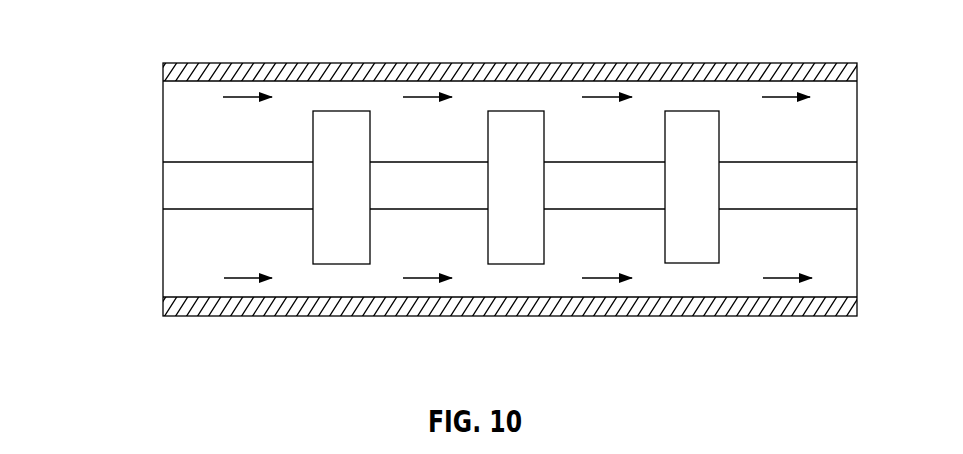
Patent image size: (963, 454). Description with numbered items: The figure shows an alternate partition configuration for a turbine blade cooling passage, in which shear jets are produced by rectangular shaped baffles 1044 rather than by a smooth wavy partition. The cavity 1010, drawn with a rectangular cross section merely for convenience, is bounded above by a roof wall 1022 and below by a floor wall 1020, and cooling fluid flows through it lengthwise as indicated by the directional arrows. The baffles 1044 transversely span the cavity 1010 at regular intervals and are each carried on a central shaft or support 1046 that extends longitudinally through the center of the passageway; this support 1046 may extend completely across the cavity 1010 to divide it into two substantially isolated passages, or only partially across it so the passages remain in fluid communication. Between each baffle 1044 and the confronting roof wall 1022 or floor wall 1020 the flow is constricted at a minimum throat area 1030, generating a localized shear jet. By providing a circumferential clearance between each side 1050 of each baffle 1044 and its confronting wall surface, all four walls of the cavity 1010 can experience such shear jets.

The cavity 1010 is at (118, 111).
The floor wall 1020 is at (233, 305).
The roof wall 1022 is at (262, 74).
The minimum throat area 1030 is at (517, 100).
The rectangular shaped baffle 1044 is at (313, 146).
The central shaft or support 1046 is at (175, 188).
The side of baffle 1050 is at (692, 111).